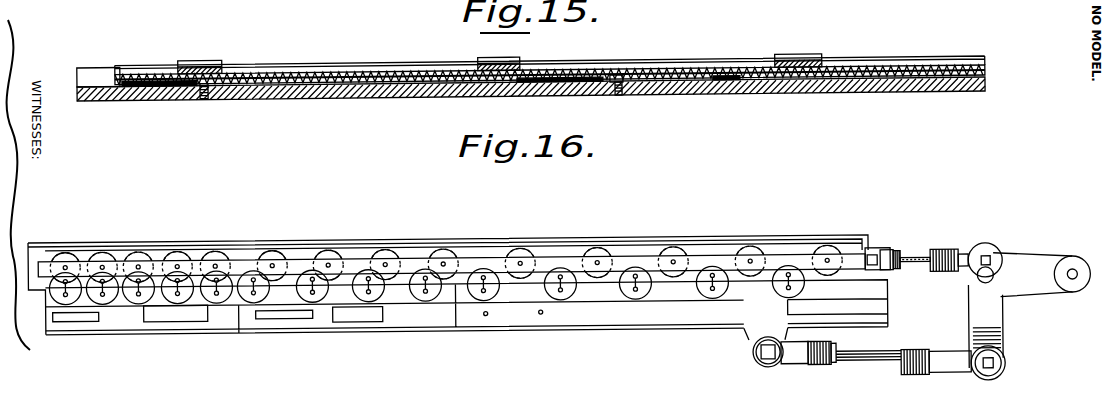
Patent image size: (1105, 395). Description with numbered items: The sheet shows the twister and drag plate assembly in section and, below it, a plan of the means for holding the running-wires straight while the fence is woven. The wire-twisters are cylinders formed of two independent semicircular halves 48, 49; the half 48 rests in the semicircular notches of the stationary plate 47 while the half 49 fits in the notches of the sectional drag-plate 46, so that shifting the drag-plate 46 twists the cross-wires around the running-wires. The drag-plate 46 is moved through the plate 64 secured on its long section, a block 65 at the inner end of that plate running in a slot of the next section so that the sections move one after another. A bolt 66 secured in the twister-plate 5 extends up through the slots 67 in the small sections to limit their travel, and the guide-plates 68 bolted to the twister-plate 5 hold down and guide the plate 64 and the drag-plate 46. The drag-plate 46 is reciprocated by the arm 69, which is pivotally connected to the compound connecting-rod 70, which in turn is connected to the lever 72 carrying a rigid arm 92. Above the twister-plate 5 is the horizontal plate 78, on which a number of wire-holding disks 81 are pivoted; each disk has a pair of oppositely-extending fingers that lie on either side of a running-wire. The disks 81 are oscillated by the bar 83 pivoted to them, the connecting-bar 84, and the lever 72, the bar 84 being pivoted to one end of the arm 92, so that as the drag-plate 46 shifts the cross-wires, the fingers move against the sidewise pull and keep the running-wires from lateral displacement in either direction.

In FIG. 15, the twister-plate 5 is at (100, 76).
In FIG. 15, the drag-plate 46 is at (283, 84).
In FIG. 16, the drag-plate 46 is at (120, 331).
In FIG. 16, the stationary plate 47 is at (148, 246).
In FIG. 16, the wire-twister half 48 is at (688, 283).
In FIG. 16, the wire-twister half 49 is at (710, 293).
In FIG. 15, the plate 64 is at (277, 77).
In FIG. 15, the block 65 is at (330, 90).
In FIG. 15, the bolt 66 is at (207, 89).
In FIG. 15, the slot 67 is at (172, 84).
In FIG. 16, the slot 67 is at (68, 318).
In FIG. 15, the guide-plate 68 is at (802, 63).
In FIG. 16, the arm 69 is at (753, 340).
In FIG. 16, the compound connecting-rod 70 is at (953, 378).
In FIG. 16, the lever 72 is at (997, 313).
In FIG. 16, the horizontal plate 78 is at (555, 257).
In FIG. 16, the wire-holding disk 81 is at (605, 258).
In FIG. 16, the bar 83 is at (483, 264).
In FIG. 16, the connecting-bar 84 is at (918, 262).
In FIG. 16, the rigid arm 92 is at (1037, 275).